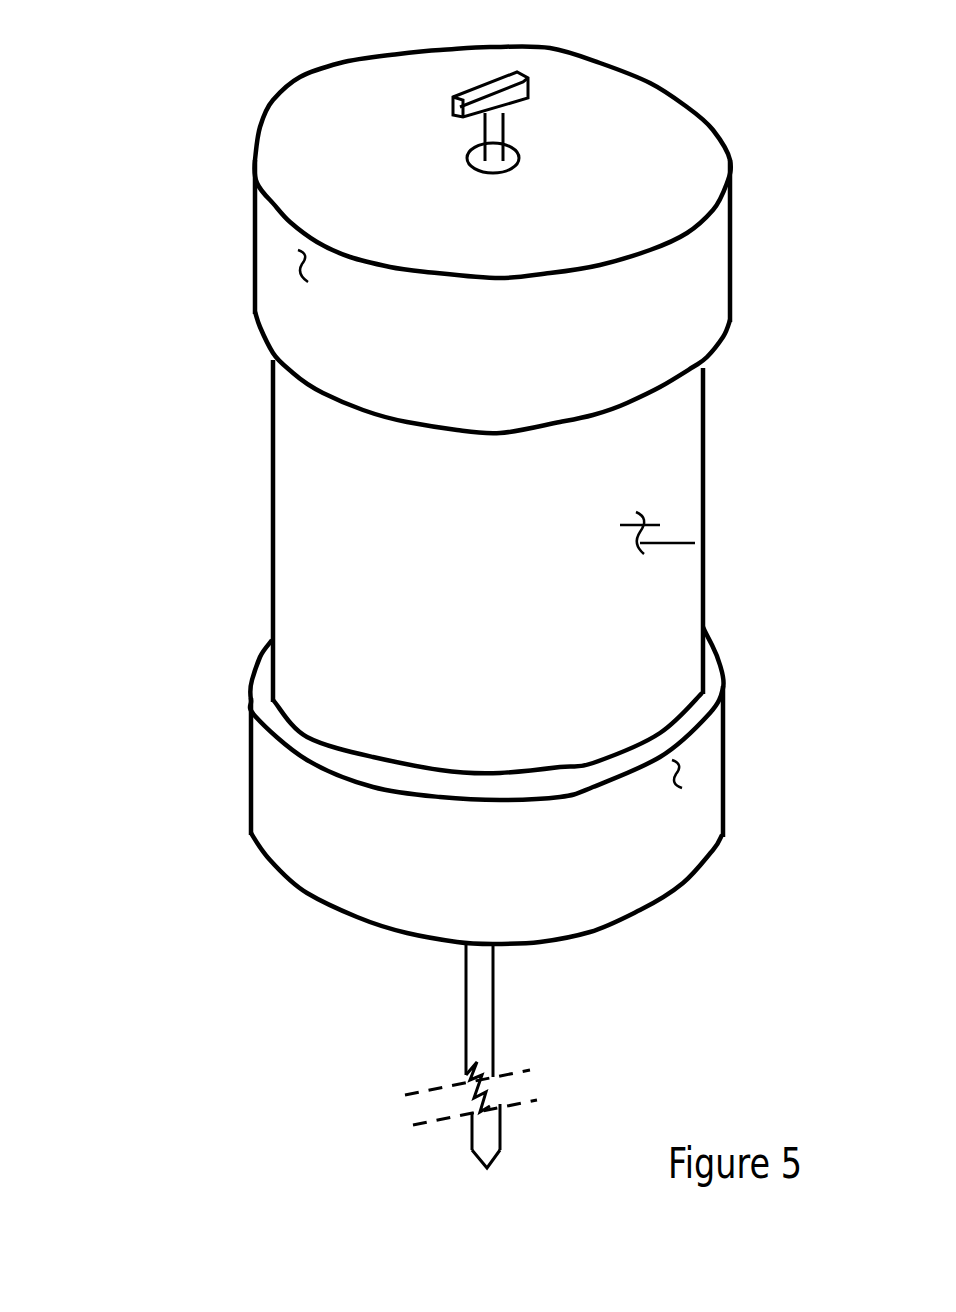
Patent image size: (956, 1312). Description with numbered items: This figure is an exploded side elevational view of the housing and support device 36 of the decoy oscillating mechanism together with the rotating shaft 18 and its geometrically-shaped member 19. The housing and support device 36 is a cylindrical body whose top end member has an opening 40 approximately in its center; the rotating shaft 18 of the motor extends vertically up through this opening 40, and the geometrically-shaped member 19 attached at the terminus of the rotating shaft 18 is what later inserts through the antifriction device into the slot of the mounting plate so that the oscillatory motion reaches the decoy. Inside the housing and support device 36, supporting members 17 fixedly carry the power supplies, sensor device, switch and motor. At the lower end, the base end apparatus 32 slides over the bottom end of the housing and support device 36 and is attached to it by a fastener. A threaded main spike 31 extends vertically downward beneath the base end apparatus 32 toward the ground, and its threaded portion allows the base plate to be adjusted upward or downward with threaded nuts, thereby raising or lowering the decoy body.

The supporting members 17 is at (296, 260).
The rotating shaft 18 is at (509, 118).
The geometrically-shaped member 19 is at (448, 107).
The opening 40 is at (520, 156).
The housing and support device 36 is at (652, 532).
The base end apparatus 32 is at (683, 772).
The threaded main spike 31 is at (478, 1022).